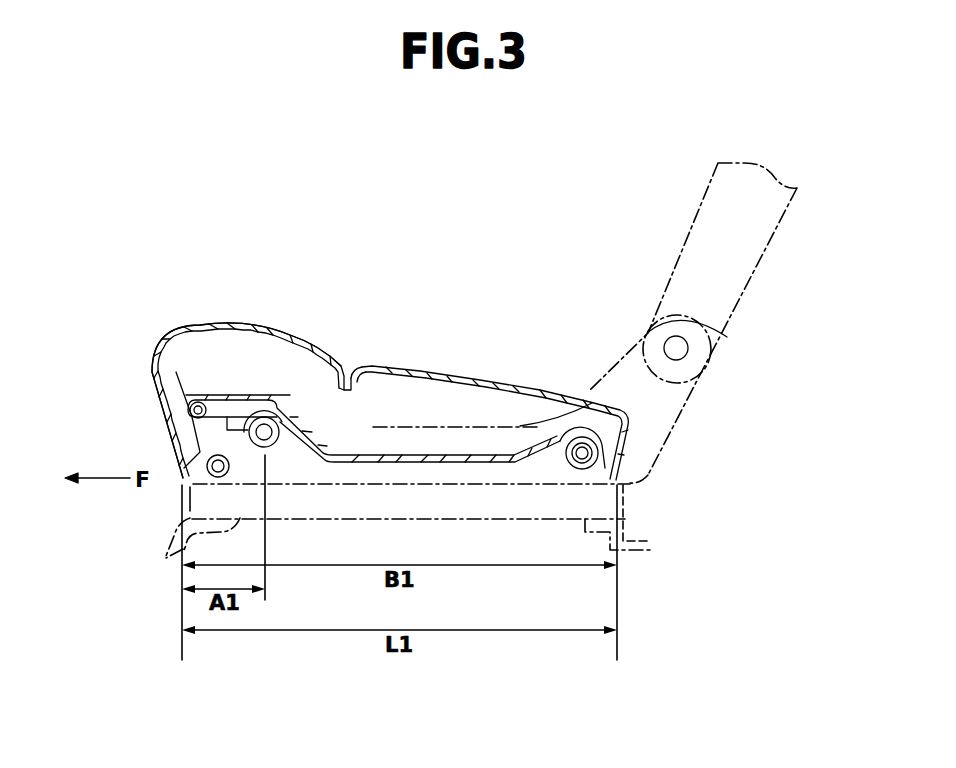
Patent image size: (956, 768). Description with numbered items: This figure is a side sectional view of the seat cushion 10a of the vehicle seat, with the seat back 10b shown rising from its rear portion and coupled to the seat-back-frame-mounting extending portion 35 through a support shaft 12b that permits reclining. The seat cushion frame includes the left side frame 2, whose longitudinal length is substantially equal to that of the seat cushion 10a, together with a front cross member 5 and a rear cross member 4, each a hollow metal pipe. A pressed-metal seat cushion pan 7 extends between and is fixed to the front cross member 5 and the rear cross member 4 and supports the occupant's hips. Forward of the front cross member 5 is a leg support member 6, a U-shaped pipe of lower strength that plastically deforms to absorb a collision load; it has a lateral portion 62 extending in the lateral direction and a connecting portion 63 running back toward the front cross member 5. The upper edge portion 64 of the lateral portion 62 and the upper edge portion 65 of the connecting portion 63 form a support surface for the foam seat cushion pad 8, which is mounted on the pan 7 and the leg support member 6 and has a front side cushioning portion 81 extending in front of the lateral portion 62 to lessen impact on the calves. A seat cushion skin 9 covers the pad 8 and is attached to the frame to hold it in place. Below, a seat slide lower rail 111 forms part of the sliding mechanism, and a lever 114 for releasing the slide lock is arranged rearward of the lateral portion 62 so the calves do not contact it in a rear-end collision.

The left side frame 2 is at (467, 427).
The rear cross member 4 is at (585, 432).
The front cross member 5 is at (287, 395).
The leg support member 6 is at (282, 264).
The lateral portion 62 is at (143, 358).
The connecting portion 63 is at (245, 395).
The upper edge portion 64 is at (197, 395).
The upper edge portion 65 is at (270, 395).
The seat cushion pan 7 is at (438, 453).
The seat cushion pad 8 is at (317, 368).
The seat cushion skin 9 is at (412, 367).
The seat cushion 10a is at (366, 366).
The seat back 10b is at (763, 267).
The support shaft 12b is at (735, 335).
The seat-back-frame-mounting extending portion 35 is at (672, 437).
The front side cushioning portion 81 is at (183, 423).
The seat slide lower rail 111 is at (628, 498).
The lever 114 is at (208, 473).